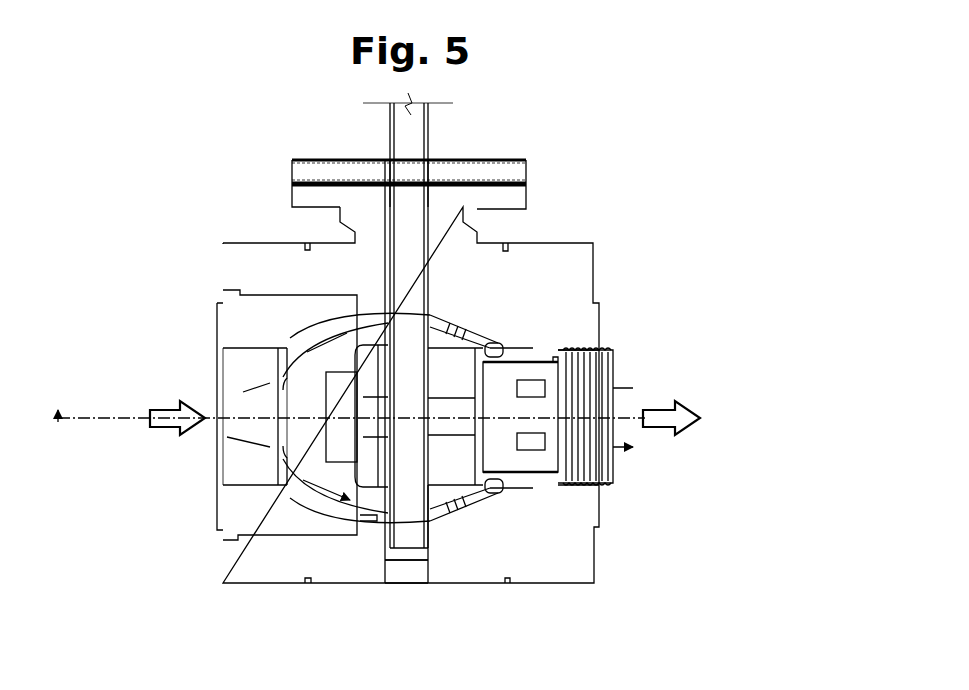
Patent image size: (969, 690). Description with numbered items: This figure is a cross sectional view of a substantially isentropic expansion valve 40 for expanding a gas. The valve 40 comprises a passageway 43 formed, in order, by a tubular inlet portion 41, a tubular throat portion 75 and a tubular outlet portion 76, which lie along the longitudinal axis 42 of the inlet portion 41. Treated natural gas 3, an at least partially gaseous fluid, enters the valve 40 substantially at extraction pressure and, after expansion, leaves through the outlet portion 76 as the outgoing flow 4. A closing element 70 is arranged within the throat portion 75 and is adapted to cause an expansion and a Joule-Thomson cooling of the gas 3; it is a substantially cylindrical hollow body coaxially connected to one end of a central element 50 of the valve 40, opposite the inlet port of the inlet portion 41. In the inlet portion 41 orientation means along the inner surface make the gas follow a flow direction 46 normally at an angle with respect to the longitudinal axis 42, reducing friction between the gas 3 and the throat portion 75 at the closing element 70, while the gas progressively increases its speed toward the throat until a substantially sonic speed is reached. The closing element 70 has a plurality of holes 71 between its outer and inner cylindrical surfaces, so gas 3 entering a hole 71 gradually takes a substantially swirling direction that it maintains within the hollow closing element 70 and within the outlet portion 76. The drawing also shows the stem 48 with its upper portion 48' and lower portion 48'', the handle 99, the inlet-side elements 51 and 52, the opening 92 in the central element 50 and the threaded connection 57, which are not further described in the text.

The treated natural gas 3 is at (165, 421).
The outlet flow arrow 4 is at (660, 422).
The substantially isentropic expansion valve 40 is at (148, 173).
The tubular inlet portion 41 is at (318, 303).
The longitudinal axis 42 is at (62, 425).
The passageway 43 is at (258, 427).
The flow direction 46 is at (243, 392).
The valve stem 48 is at (370, 315).
The upper stem portion 48' is at (350, 161).
The lower stem portion 48'' is at (379, 602).
The central element 50 is at (298, 455).
The inlet seat 51 is at (282, 345).
The seat ring 52 is at (278, 372).
The threaded outlet connection 57 is at (605, 368).
The closing element 70 is at (547, 480).
The holes 71 is at (537, 438).
The tubular throat portion 75 is at (505, 340).
The tubular outlet portion 76 is at (618, 398).
The ball opening 92 is at (287, 342).
The handle 99 is at (535, 152).